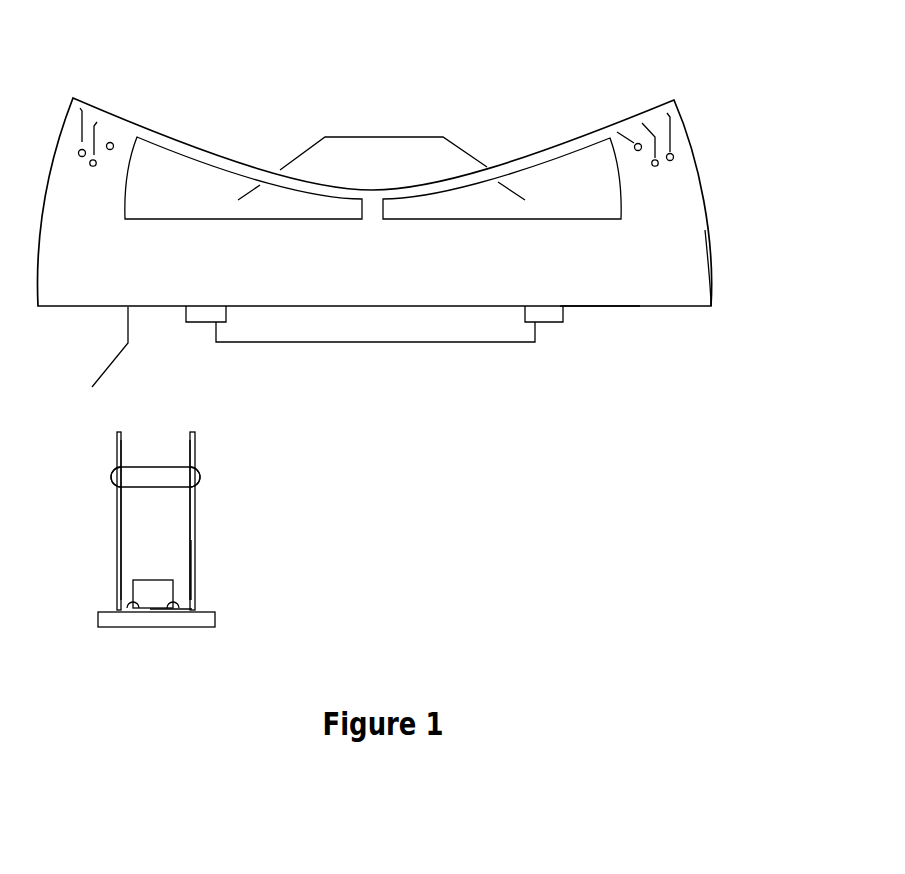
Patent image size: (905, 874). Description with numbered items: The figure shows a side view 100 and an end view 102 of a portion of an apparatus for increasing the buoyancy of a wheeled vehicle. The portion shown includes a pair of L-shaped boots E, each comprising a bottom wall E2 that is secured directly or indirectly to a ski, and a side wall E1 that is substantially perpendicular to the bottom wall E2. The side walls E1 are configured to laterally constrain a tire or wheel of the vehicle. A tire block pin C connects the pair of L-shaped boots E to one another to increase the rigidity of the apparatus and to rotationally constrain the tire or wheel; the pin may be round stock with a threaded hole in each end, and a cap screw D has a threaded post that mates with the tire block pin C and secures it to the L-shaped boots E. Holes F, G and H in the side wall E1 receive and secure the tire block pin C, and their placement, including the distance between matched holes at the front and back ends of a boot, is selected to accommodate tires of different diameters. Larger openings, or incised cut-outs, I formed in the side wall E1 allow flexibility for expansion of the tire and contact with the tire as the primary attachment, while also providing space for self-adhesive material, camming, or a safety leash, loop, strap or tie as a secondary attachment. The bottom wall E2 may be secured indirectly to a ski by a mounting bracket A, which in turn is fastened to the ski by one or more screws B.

The side view 100 is at (693, 58).
The end view 102 is at (230, 520).
The mounting bracket A is at (373, 342).
The screw B is at (133, 578).
The tire block pin C is at (152, 490).
The cap screw D is at (113, 477).
The L-shaped boot E is at (133, 437).
The side wall E1 is at (690, 260).
The bottom wall E2 is at (655, 320).
The hole F is at (115, 142).
The hole G is at (98, 122).
The hole H is at (86, 107).
The incised cut-out I is at (375, 137).